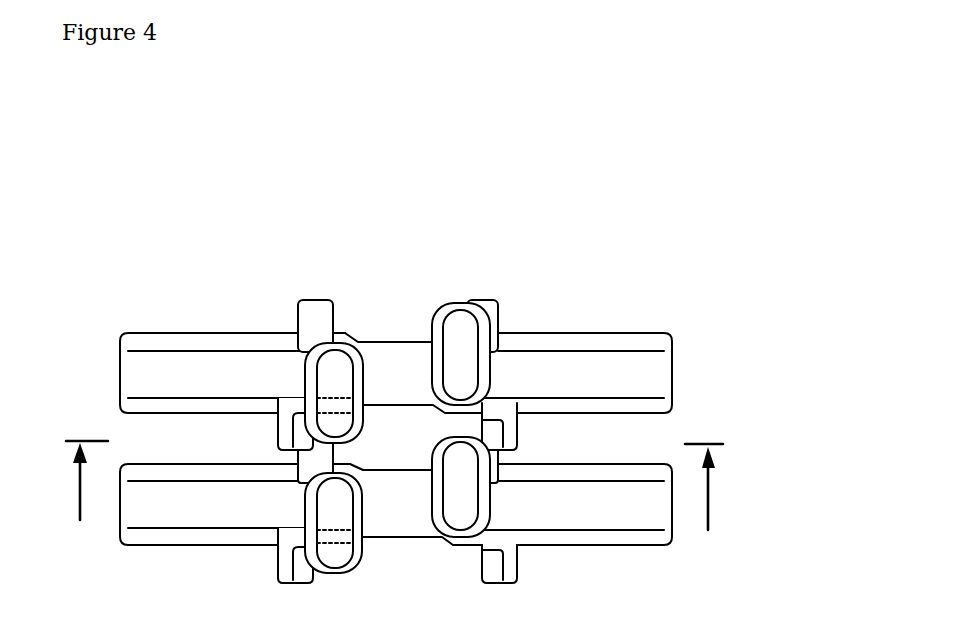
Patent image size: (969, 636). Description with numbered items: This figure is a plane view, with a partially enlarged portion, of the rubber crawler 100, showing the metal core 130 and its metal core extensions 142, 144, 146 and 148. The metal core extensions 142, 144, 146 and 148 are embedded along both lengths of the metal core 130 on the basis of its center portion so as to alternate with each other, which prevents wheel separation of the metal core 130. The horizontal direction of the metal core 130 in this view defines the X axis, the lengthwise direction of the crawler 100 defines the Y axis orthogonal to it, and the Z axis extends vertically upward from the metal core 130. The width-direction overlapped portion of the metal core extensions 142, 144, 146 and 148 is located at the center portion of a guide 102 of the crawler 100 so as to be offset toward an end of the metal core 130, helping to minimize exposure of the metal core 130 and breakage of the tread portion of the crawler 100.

The rubber crawler 100 is at (396, 397).
The guide 102 is at (457, 362).
The metal core 130 is at (397, 397).
The metal core extension 142 is at (278, 440).
The metal core extension 144 is at (315, 330).
The metal core extension 146 is at (517, 440).
The metal core extension 148 is at (485, 330).